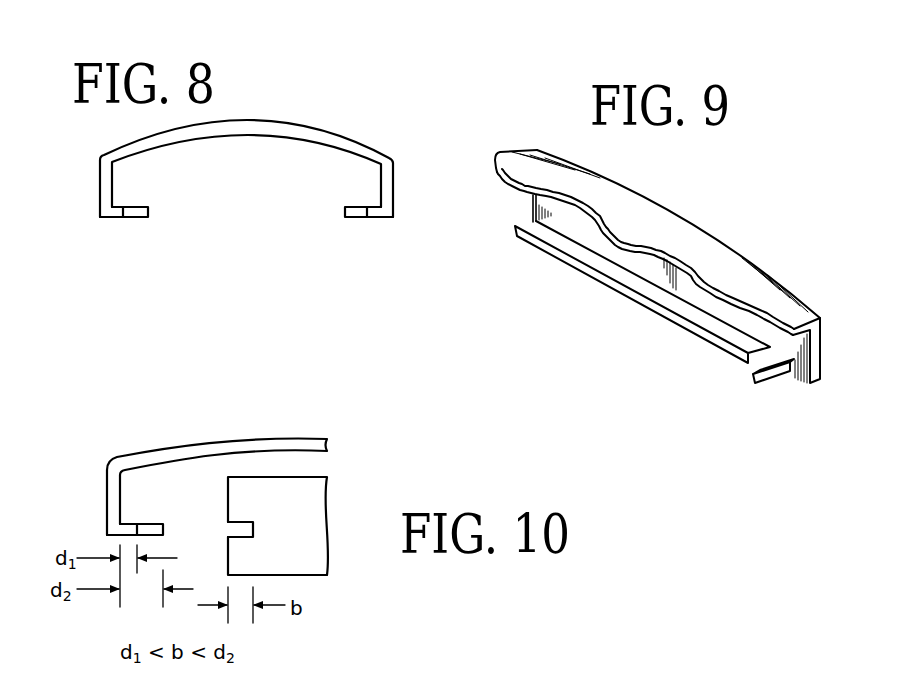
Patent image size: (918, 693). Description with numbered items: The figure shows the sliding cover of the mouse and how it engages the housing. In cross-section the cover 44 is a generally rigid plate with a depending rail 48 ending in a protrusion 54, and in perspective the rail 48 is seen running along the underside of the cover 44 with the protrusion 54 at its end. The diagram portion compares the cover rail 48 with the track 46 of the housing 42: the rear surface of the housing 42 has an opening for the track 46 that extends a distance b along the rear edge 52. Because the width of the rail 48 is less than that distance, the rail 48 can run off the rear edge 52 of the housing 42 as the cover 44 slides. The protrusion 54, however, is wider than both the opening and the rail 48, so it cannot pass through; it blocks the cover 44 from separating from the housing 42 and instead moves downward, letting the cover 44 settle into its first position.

In FIG. 8, the cover 44 is at (297, 128).
In FIG. 9, the cover 44 is at (658, 218).
In FIG. 10, the cover 44 is at (265, 438).
In FIG. 8, the rail 48 is at (115, 205).
In FIG. 9, the rail 48 is at (572, 262).
In FIG. 10, the rail 48 is at (130, 524).
In FIG. 9, the protrusion 54 is at (772, 380).
In FIG. 10, the protrusion 54 is at (155, 524).
In FIG. 10, the housing 42 is at (318, 520).
In FIG. 10, the track 46 is at (243, 520).
In FIG. 10, the rear edge 52 is at (307, 558).